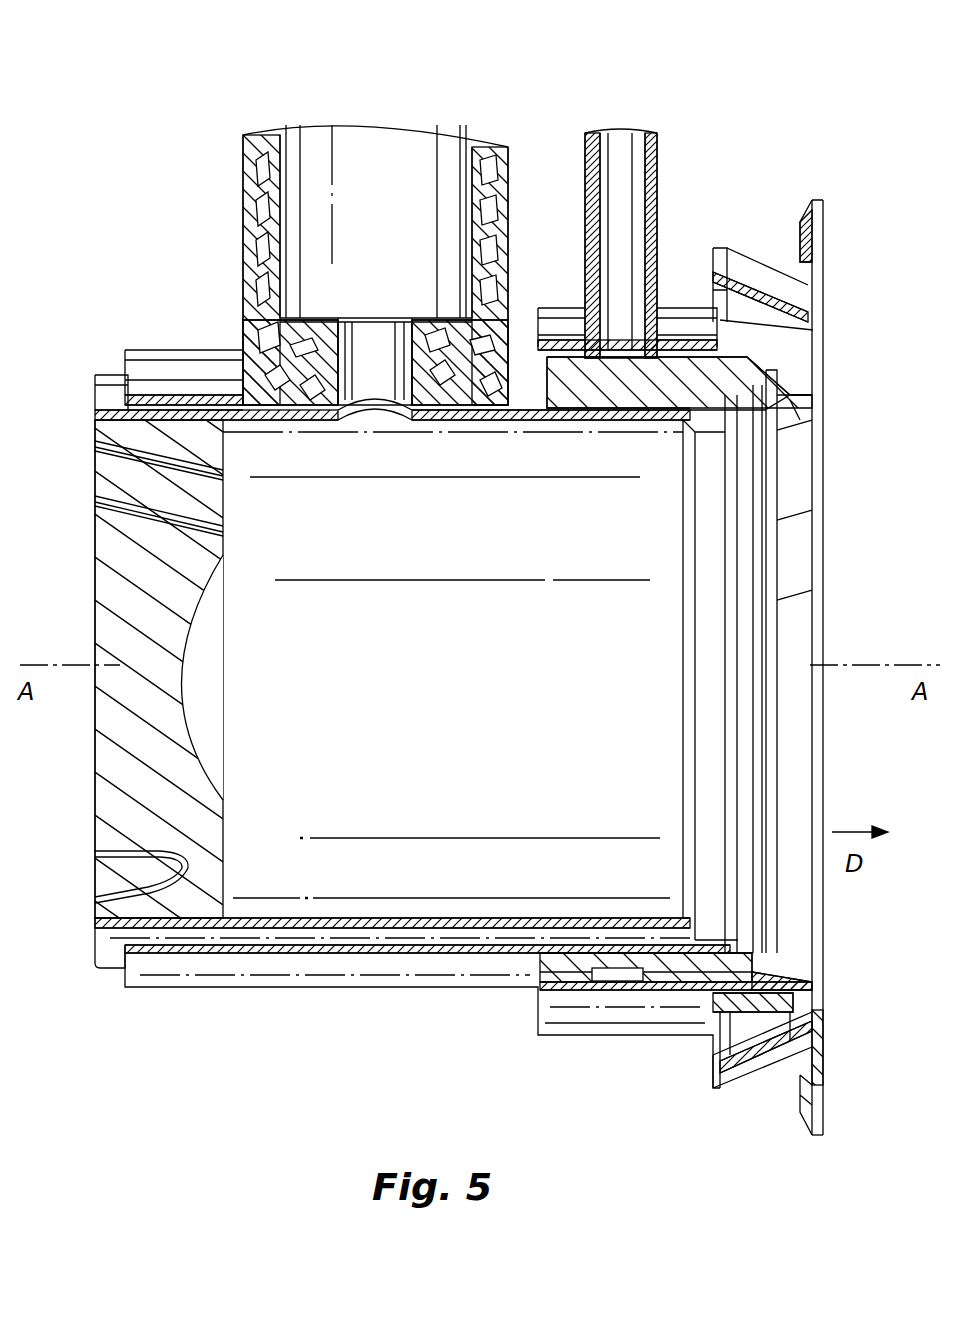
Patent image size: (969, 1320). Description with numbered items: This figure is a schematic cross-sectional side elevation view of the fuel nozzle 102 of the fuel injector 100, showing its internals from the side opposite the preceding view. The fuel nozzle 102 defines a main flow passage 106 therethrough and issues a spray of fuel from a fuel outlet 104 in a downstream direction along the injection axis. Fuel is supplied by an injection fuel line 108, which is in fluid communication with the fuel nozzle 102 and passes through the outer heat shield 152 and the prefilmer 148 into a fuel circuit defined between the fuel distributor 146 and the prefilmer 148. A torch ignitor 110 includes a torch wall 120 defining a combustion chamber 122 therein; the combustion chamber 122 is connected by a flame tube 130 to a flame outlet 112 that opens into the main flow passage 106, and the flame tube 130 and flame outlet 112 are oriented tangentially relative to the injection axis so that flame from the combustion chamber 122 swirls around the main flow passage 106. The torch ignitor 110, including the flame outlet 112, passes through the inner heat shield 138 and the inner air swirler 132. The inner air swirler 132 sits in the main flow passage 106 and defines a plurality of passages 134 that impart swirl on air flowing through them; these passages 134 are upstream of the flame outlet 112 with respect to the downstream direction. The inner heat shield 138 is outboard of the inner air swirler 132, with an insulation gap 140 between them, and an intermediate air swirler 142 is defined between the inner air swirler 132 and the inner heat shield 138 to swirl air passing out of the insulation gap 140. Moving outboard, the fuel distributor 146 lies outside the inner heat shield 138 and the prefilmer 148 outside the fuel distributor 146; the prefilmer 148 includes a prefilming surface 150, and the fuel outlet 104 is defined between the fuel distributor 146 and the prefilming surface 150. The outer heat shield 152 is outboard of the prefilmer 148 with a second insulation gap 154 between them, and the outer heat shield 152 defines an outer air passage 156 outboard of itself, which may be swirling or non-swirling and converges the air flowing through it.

The fuel injector 100 is at (120, 172).
The fuel nozzle 102 is at (421, 1017).
The fuel outlet 104 is at (787, 377).
The main flow passage 106 is at (450, 694).
The injection fuel line 108 is at (660, 150).
The torch ignitor 110 is at (238, 150).
The flame outlet 112 is at (363, 419).
The torch wall 120 is at (240, 225).
The combustion chamber 122 is at (367, 190).
The flame tube 130 is at (377, 420).
The inner air swirler 132 is at (98, 590).
The passages 134 is at (122, 491).
The inner heat shield 138 is at (190, 365).
The insulation gap 140 is at (112, 388).
The intermediate air swirler 142 is at (665, 422).
The fuel distributor 146 is at (715, 400).
The prefilmer 148 is at (810, 382).
The prefilming surface 150 is at (770, 372).
The outer heat shield 152 is at (685, 322).
The insulation gap 154 is at (562, 340).
The outer air passage 156 is at (738, 310).